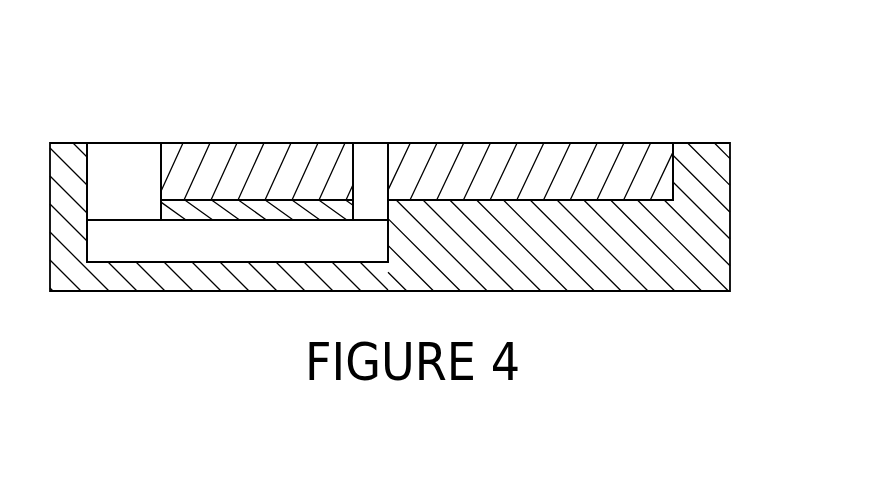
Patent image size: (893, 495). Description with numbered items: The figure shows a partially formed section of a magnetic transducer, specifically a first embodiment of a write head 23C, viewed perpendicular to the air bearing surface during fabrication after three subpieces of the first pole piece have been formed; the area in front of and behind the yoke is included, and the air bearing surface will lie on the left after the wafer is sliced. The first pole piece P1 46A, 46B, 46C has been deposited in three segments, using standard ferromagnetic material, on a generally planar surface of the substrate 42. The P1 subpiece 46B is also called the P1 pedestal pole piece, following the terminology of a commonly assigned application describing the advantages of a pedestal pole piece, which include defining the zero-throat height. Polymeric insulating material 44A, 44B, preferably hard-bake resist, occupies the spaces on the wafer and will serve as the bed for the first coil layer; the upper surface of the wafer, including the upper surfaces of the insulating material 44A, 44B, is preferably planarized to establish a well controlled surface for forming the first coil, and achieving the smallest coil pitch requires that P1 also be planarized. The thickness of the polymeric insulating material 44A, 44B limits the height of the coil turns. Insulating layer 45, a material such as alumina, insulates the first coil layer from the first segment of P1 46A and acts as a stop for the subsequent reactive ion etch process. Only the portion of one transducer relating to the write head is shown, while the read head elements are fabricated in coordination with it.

The substrate 42 is at (421, 218).
The polymeric insulating material 44A is at (317, 162).
The polymeric insulating material 44B is at (470, 160).
The insulating layer 45 is at (187, 216).
The first segment of P1 46A is at (210, 243).
The P1 pedestal pole piece 46B is at (131, 162).
The P1 subpiece 46C is at (372, 160).
The first pole piece P1 is at (137, 88).
The write head 23C is at (580, 118).